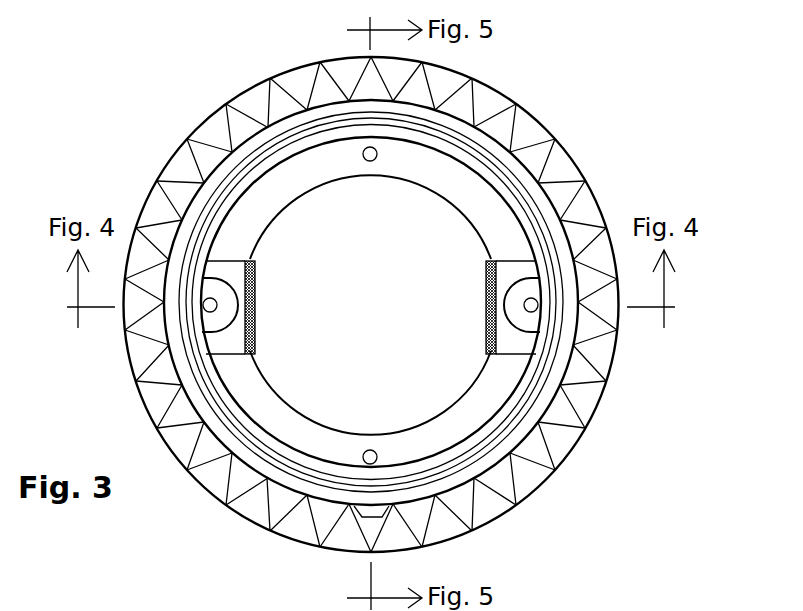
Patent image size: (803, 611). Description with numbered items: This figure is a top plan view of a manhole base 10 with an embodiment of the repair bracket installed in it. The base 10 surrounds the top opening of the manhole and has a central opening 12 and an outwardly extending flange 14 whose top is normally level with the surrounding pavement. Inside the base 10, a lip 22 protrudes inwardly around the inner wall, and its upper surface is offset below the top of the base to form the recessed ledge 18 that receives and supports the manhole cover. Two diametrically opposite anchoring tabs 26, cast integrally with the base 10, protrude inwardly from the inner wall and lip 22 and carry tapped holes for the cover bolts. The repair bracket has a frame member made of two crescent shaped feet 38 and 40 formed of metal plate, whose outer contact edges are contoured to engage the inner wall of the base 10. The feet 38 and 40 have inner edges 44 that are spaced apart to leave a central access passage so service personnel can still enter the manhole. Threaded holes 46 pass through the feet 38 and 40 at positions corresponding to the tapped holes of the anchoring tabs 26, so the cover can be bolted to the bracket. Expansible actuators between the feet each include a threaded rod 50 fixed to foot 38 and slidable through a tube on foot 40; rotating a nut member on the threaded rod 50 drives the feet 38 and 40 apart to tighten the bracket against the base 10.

The base 10 is at (569, 131).
The central opening 12 is at (225, 122).
The outwardly extending flange 14 is at (579, 173).
The recessed ledge 18 is at (513, 117).
The lip 22 is at (556, 246).
The anchoring tabs 26 is at (222, 318).
The crescent shaped foot 38 is at (312, 453).
The crescent shaped foot 40 is at (312, 223).
The inner edges 44 is at (322, 188).
The threaded holes 46 is at (377, 149).
The threaded rod 50 is at (256, 296).